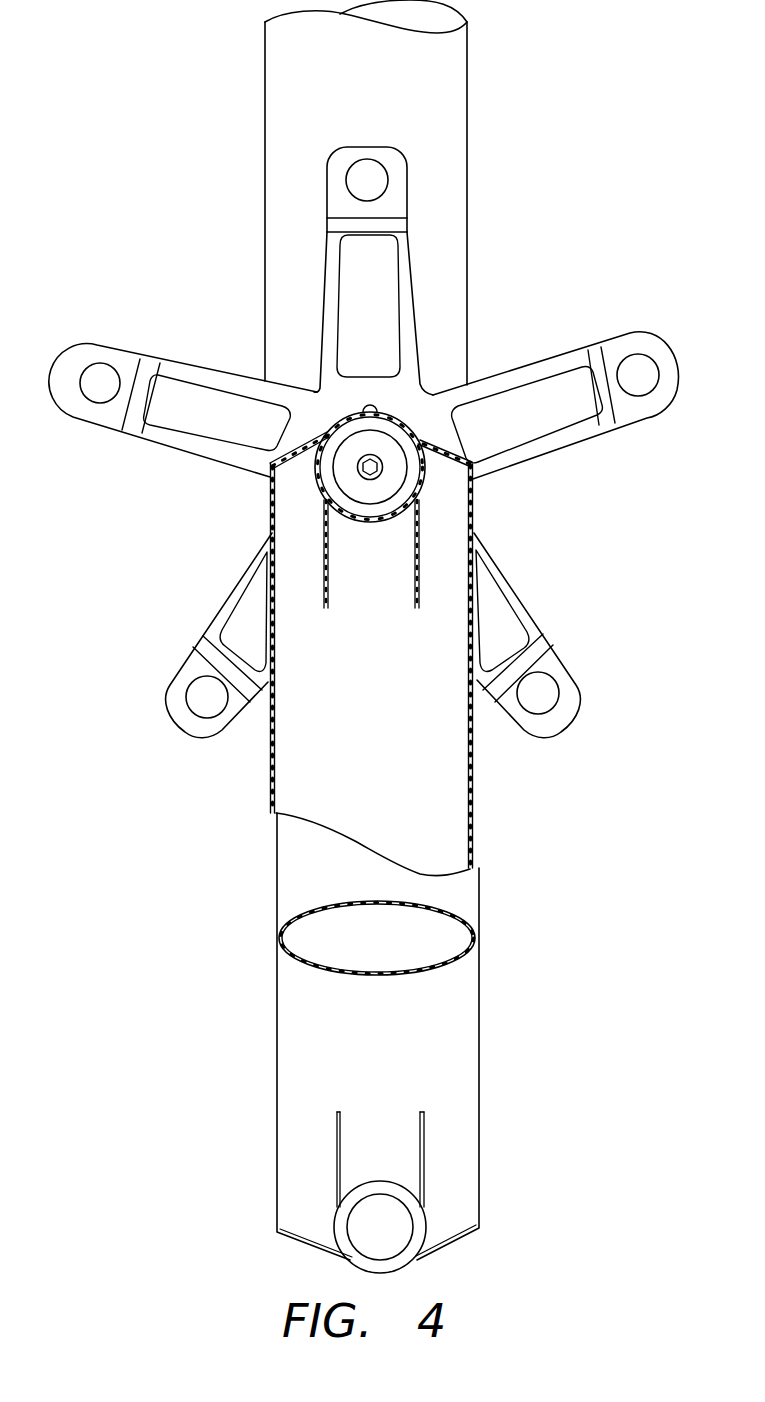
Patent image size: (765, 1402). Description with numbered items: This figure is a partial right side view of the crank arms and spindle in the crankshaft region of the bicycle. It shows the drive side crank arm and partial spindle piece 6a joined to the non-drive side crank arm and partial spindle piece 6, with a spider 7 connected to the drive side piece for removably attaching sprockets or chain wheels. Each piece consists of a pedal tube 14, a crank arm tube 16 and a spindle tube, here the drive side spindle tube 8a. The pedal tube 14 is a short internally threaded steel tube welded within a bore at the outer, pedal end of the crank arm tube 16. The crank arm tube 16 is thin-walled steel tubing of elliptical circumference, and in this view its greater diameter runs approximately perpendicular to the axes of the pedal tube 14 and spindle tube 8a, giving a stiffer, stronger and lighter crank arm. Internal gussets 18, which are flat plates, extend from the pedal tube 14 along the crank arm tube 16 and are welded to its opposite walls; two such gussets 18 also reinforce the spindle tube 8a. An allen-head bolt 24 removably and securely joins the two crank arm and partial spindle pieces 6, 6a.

The non-drive side crank arm and partial spindle piece 6 is at (468, 180).
The drive side crank arm and partial spindle piece 6a is at (273, 863).
The spider 7 is at (610, 344).
The drive side spindle tube 8a is at (403, 418).
The pedal tube 14 is at (422, 1231).
The crank arm tube 16 is at (477, 801).
The internal gussets 18 is at (330, 555).
The allen-head bolt 24 is at (393, 471).